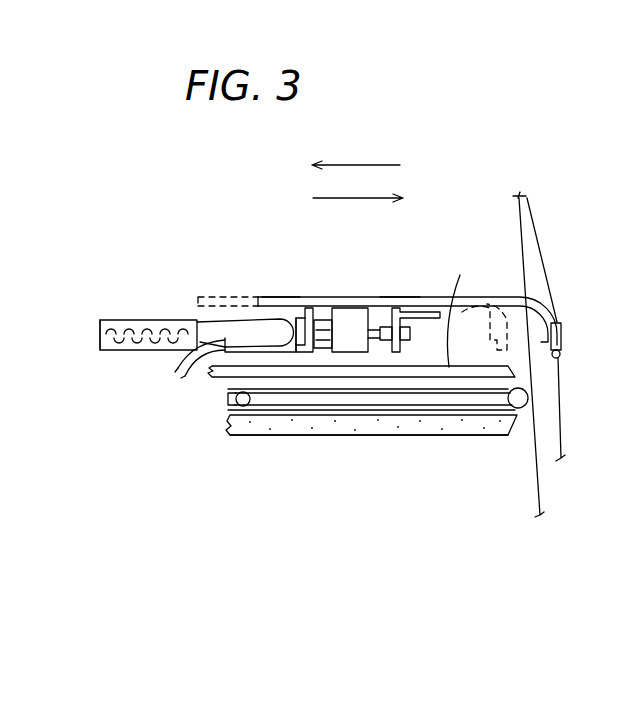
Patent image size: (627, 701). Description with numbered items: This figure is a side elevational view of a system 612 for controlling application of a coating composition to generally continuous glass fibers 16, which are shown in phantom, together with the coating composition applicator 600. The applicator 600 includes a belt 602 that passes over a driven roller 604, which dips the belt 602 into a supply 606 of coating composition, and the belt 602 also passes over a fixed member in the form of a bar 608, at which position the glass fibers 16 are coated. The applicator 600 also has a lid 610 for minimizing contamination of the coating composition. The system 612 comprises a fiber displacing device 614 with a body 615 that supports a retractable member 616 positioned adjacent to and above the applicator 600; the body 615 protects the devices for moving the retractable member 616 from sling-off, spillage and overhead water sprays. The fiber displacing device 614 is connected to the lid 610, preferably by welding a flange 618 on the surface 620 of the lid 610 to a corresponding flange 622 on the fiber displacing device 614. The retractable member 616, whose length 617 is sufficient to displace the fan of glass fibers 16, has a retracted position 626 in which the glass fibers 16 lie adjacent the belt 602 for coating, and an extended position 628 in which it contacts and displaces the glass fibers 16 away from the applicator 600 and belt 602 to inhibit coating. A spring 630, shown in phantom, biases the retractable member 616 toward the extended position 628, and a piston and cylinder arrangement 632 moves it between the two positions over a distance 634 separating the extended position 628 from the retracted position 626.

The glass fibers 16 is at (518, 222).
The applicator 600 is at (250, 434).
The belt 602 is at (317, 393).
The driven roller 604 is at (234, 400).
The supply of coating composition 606 is at (365, 428).
The bar 608 is at (510, 403).
The lid 610 is at (212, 384).
The system 612 is at (238, 209).
The fiber displacing device 614 is at (334, 297).
The body 615 is at (268, 297).
The retractable member 616 is at (558, 323).
The length of the retractable member 617 is at (557, 358).
The flange 618 is at (240, 360).
The surface of the lid 620 is at (410, 306).
The flange 622 is at (281, 300).
The retracted position 626 is at (198, 297).
The extended position 628 is at (395, 297).
The spring 630 is at (98, 338).
The piston and cylinder arrangement 632 is at (100, 321).
The distance 634 is at (258, 299).